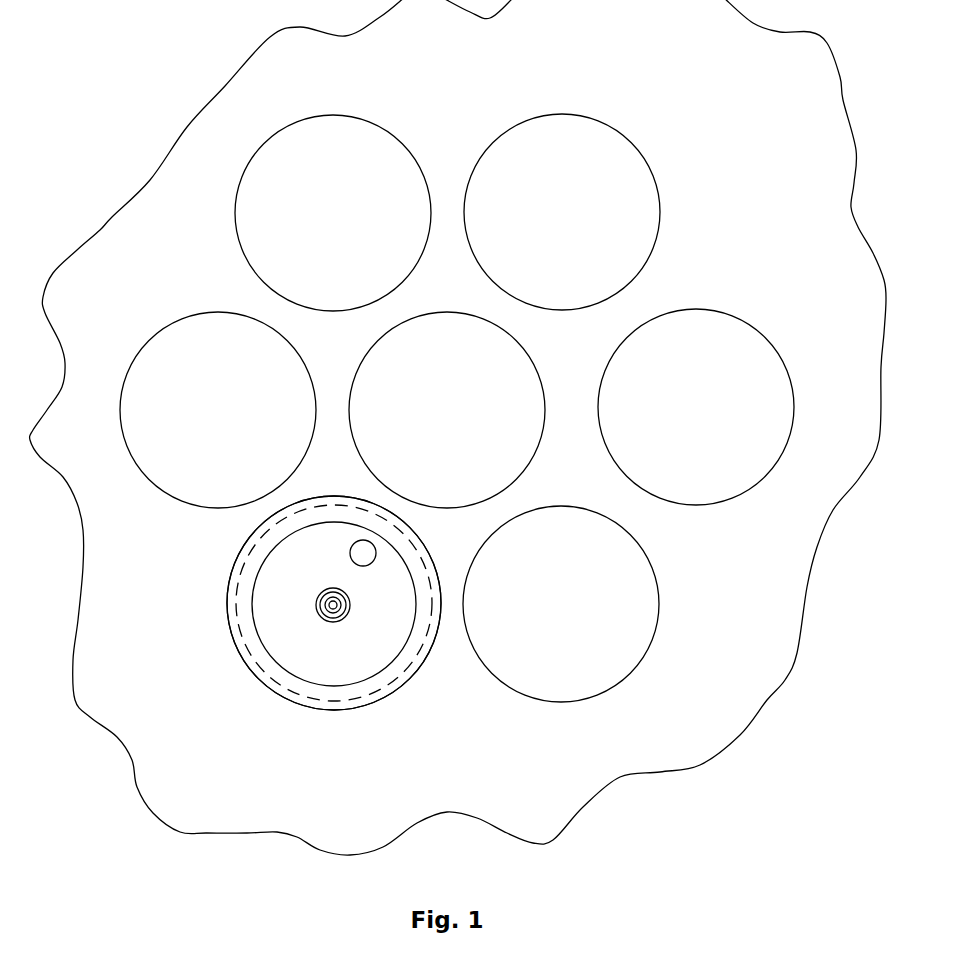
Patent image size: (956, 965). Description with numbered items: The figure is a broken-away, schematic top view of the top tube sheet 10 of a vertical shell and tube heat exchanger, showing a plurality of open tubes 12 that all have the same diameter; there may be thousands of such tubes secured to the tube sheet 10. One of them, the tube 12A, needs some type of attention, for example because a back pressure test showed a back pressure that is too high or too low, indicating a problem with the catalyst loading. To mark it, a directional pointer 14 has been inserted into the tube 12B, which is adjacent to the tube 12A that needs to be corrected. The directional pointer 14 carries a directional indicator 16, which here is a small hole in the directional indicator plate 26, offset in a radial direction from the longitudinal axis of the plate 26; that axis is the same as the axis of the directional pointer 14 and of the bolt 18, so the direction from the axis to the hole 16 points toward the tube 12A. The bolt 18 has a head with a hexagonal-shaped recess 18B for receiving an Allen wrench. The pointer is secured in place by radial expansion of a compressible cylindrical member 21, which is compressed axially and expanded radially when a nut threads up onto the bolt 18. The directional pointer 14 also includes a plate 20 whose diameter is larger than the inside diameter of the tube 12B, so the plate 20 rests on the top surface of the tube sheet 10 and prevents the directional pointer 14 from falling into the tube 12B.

The tube sheet 10 is at (622, 73).
The tubes 12 is at (631, 141).
The tube 12A is at (533, 360).
The tube 12B is at (218, 733).
The directional pointer 14 is at (473, 616).
The directional indicator 16 is at (350, 553).
The bolt 18 is at (346, 614).
The hexagonal-shaped recess 18B is at (318, 605).
The plate 20 is at (418, 675).
The compressible cylindrical member 21 is at (283, 680).
The directional indicator plate 26 is at (333, 692).